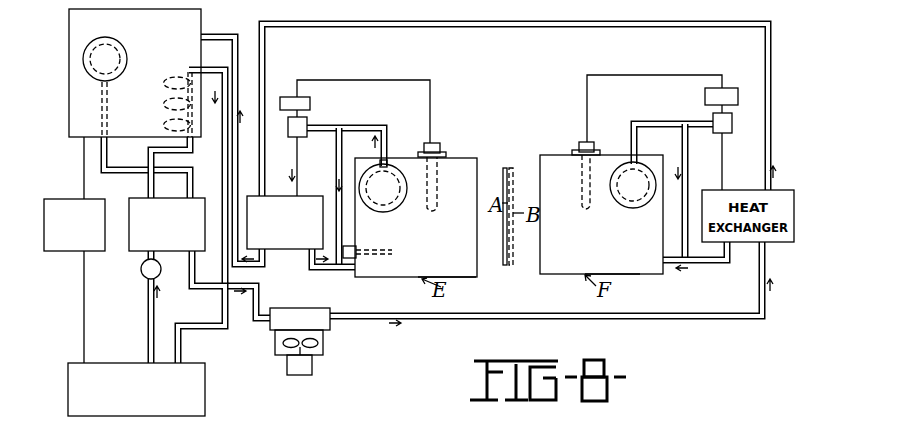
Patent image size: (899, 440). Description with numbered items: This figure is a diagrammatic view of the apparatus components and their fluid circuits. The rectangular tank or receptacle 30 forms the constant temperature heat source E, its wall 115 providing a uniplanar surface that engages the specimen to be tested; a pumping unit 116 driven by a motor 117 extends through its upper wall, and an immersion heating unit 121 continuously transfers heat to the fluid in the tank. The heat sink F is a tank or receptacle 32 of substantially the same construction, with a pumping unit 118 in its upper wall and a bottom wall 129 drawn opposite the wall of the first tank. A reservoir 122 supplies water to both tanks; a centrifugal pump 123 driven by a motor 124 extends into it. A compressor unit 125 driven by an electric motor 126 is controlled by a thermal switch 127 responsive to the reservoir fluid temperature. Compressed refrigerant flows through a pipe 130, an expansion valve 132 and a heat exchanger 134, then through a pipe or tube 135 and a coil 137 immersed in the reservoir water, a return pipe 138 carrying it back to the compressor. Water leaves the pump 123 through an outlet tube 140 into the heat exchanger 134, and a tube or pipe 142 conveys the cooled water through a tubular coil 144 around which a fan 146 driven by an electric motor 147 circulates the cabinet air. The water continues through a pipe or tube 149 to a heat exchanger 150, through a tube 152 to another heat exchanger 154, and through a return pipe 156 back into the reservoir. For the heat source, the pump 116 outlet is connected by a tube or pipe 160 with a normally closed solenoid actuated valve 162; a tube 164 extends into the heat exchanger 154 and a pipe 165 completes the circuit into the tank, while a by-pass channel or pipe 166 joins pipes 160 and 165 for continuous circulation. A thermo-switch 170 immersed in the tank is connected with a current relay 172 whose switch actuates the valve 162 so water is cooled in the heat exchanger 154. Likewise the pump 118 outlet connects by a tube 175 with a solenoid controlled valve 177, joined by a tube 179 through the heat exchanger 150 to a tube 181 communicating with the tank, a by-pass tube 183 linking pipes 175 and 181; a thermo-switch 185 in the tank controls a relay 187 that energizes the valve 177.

The tank or receptacle 30 is at (481, 165).
The tank or receptacle 32 is at (546, 155).
The wall 115 is at (474, 272).
The pumping unit 116 is at (388, 210).
The motor 117 is at (392, 166).
The pumping unit 118 is at (629, 206).
The heating unit 121 is at (375, 254).
The reservoir 122 is at (69, 96).
The pump 123 is at (85, 46).
The motor 124 is at (90, 61).
The compressor unit 125 is at (206, 394).
The electric motor 126 is at (141, 262).
The thermal switch 127 is at (68, 252).
The second tank bottom wall 129 is at (541, 272).
The pipe 130 is at (148, 339).
The expansion valve 132 is at (145, 284).
The heat exchanger 134 is at (130, 234).
The pipe or tube 135 is at (147, 184).
The coil 137 is at (176, 78).
The return pipe 138 is at (221, 157).
The outlet tube 140 is at (100, 153).
The tube or pipe 142 is at (215, 290).
The tubular coil 144 is at (307, 298).
The fan 146 is at (322, 348).
The electric motor 147 is at (313, 371).
The pipe or tube 149 is at (458, 318).
The heat exchanger 150 is at (770, 243).
The tube 152 is at (526, 28).
The heat exchanger 154 is at (275, 250).
The return pipe 156 is at (232, 34).
The tube or pipe 160 is at (360, 129).
The solenoid actuated valve 162 is at (308, 124).
The tube 164 is at (296, 156).
The pipe 165 is at (311, 270).
The by-pass channel or pipe 166 is at (335, 170).
The thermo-regulator or thermo-switch 170 is at (436, 176).
The current relay 172 is at (289, 96).
The tube 175 is at (652, 102).
The solenoid controlled valve 177 is at (733, 122).
The tube 179 is at (723, 158).
The tube 181 is at (717, 265).
The by-pass tube 183 is at (684, 149).
The thermo-regulator or thermo-switch 185 is at (592, 177).
The relay 187 is at (737, 88).